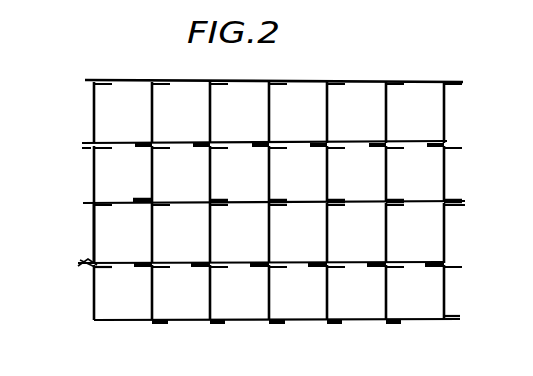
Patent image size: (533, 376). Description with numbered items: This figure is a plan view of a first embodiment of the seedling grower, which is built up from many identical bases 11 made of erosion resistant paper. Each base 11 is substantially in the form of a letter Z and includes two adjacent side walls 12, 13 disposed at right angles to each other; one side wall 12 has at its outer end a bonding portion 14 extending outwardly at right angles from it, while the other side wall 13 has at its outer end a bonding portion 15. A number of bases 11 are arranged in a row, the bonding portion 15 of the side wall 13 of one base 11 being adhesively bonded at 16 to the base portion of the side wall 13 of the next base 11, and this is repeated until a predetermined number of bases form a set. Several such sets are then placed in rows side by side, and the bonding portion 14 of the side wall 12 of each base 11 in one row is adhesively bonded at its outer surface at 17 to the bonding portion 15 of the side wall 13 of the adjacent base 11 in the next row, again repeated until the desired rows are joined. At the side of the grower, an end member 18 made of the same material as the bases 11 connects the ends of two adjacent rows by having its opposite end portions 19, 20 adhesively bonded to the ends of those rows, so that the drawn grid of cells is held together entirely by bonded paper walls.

The base 11 is at (100, 321).
The side wall 12 is at (93, 288).
The side wall 13 is at (130, 322).
The bonding portion 14 is at (90, 272).
The bonding portion 15 is at (153, 322).
The adhesive bond 16 is at (166, 318).
The adhesive bond 17 is at (85, 263).
The end member 18 is at (93, 213).
The end portion 19 is at (95, 199).
The end portion 20 is at (90, 262).